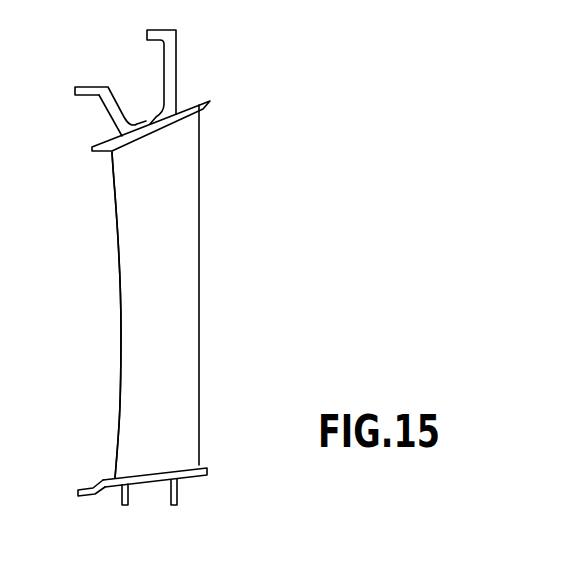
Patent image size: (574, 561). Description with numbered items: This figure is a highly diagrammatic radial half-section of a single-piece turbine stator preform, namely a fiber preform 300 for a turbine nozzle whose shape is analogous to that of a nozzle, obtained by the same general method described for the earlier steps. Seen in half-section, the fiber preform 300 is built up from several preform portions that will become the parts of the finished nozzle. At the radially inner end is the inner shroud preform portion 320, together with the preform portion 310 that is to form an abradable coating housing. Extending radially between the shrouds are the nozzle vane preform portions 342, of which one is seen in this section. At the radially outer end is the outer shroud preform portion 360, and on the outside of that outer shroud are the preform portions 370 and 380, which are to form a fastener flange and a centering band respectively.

The fiber preform 300 is at (213, 266).
The preform portion for abradable coating housing 310 is at (180, 493).
The inner shroud preform portion 320 is at (140, 476).
The nozzle vane preform portions 342 is at (147, 215).
The outer shroud preform portion 360 is at (205, 108).
The fastener flange preform portion 370 is at (173, 58).
The centering band preform portion 380 is at (92, 88).